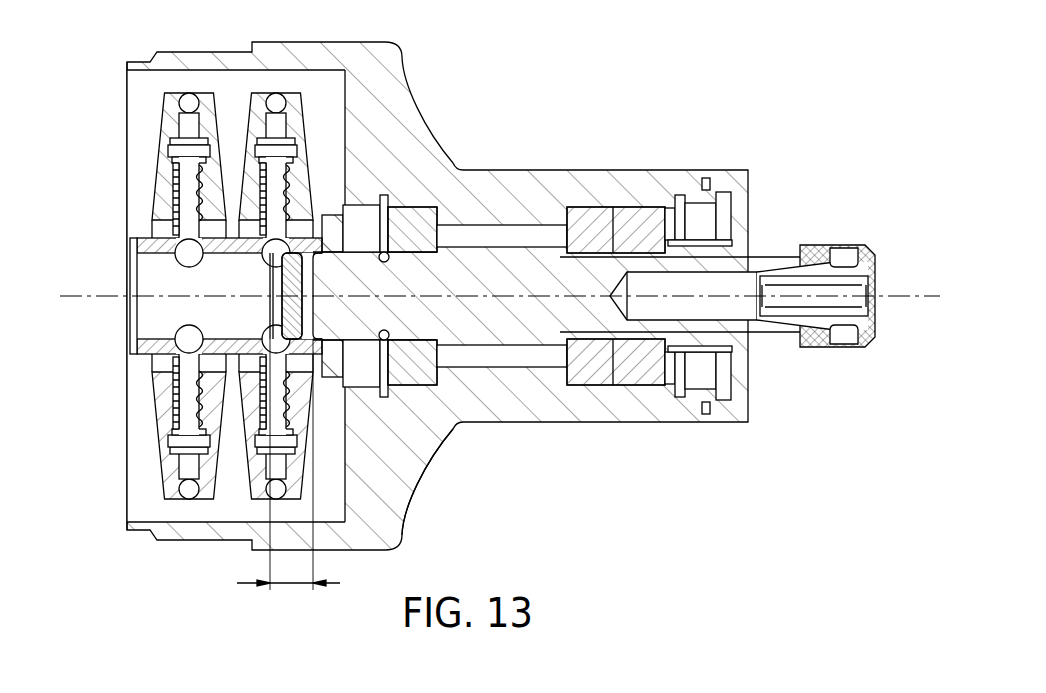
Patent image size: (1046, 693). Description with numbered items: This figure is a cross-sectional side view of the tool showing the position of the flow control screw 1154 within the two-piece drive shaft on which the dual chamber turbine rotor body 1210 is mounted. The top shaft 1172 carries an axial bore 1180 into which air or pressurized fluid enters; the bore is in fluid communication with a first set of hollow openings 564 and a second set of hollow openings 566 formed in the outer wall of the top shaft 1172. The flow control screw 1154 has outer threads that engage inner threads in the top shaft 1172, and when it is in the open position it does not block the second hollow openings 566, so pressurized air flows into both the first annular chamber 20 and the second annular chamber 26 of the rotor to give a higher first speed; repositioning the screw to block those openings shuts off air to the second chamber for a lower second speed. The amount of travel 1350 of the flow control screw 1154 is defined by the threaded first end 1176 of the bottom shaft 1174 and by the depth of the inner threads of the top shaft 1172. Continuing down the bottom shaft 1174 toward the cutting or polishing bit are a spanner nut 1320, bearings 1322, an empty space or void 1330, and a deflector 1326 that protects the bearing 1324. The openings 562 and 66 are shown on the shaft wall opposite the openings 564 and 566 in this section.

The dual chamber turbine rotor body 1210 is at (400, 57).
The first annular chamber 20 is at (165, 178).
The second annular chamber 26 is at (294, 133).
The first set of hollow openings 564 is at (176, 249).
The ball 562 is at (176, 343).
The second set of hollow openings 566 is at (274, 254).
The ball 66 is at (274, 328).
The axial bore 1180 is at (130, 285).
The top shaft 1172 is at (140, 312).
The flow control screw 1154 is at (296, 280).
The spanner nut 1320 is at (362, 204).
The bearings 1322 is at (443, 163).
The bearing 1324 is at (594, 207).
The deflector 1326 is at (738, 216).
The first end 1176 is at (503, 258).
The empty space or void 1330 is at (491, 360).
The bottom shaft 1174 is at (462, 328).
The amount of travel 1350 is at (256, 469).